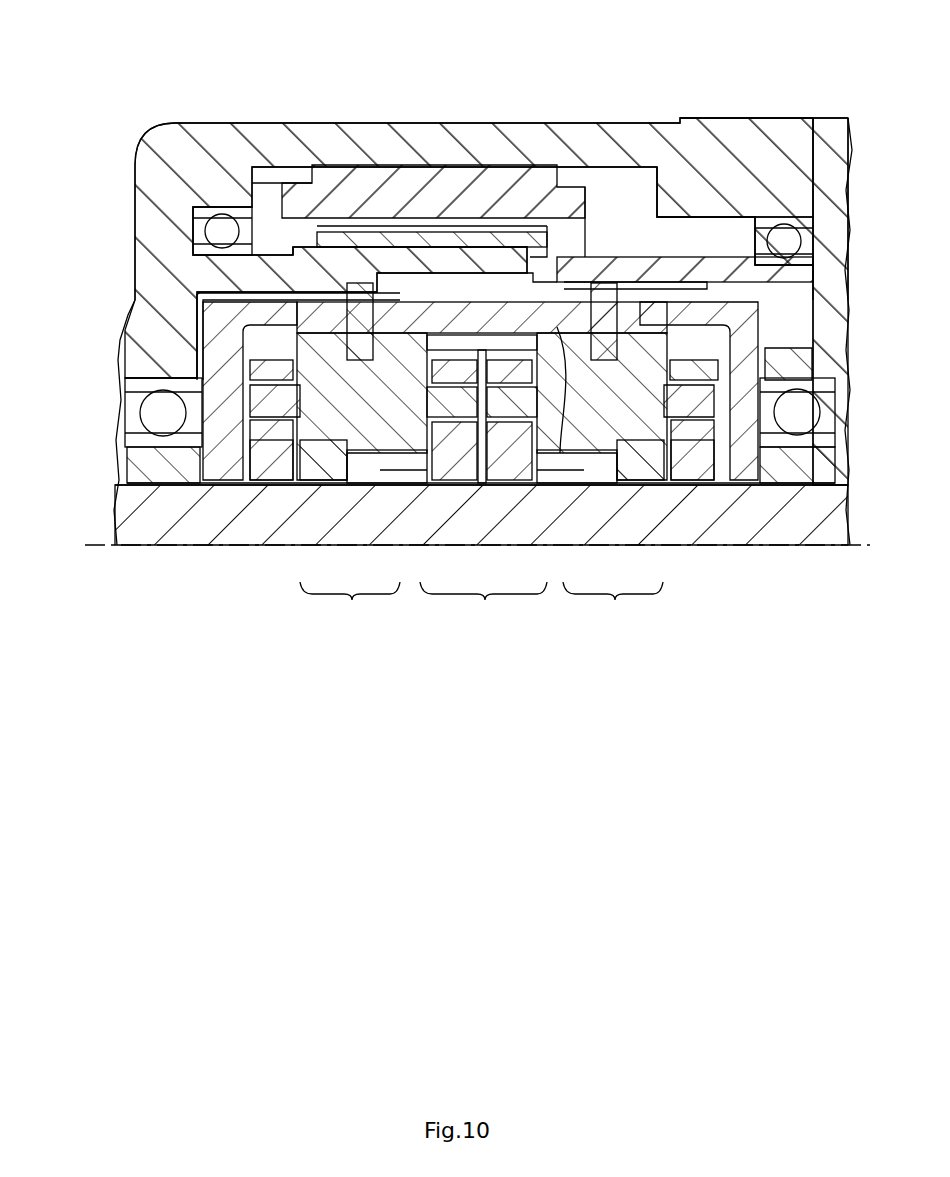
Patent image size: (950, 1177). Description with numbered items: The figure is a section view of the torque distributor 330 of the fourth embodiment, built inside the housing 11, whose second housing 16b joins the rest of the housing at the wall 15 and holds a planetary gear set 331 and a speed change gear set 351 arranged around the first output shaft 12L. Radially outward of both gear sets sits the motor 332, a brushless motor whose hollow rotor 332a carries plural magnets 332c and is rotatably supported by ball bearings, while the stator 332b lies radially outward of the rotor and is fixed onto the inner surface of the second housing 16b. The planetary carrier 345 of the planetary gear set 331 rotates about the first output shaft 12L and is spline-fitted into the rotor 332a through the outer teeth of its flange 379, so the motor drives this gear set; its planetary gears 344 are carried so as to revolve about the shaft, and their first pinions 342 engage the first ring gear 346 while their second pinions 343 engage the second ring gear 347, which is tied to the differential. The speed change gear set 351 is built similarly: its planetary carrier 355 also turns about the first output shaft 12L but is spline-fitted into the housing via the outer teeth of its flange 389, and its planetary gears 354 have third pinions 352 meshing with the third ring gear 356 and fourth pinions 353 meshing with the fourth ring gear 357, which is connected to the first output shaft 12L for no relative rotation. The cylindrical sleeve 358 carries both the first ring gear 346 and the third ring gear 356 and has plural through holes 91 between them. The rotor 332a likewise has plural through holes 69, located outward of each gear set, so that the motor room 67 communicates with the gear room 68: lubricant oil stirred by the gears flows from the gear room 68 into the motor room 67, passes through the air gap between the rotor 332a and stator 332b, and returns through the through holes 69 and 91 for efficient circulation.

The torque distributor 330 is at (95, 132).
The planetary gear set 331 is at (796, 308).
The motor 332 is at (433, 148).
The rotor 332a is at (407, 232).
The stator 332b is at (362, 170).
The magnets 332c is at (477, 232).
The through holes 69 is at (272, 250).
The gear room 68 is at (518, 278).
The motor room 67 is at (578, 245).
The housing 11 is at (763, 157).
The second housing 16b is at (777, 127).
The wall 15 is at (839, 180).
The speed change gear set 351 is at (192, 325).
The through holes 91 is at (477, 303).
The fourth ring gear 357 is at (318, 325).
The flange 389 is at (358, 362).
The flange 379 is at (622, 396).
The second ring gear 347 is at (600, 356).
The third ring gear 356 is at (434, 440).
The third pinions 352 is at (392, 450).
The fourth pinions 353 is at (320, 460).
The planetary gears 354 is at (350, 604).
The planetary carrier 355 is at (265, 473).
The cylindrical sleeve 358 is at (483, 604).
The first ring gear 346 is at (540, 440).
The first pinions 342 is at (590, 450).
The second pinions 343 is at (641, 455).
The planetary gears 344 is at (613, 604).
The planetary carrier 345 is at (697, 473).
The first output shaft 12L is at (120, 498).